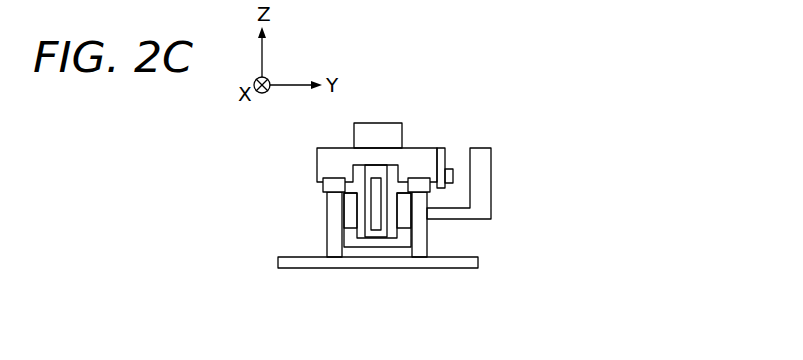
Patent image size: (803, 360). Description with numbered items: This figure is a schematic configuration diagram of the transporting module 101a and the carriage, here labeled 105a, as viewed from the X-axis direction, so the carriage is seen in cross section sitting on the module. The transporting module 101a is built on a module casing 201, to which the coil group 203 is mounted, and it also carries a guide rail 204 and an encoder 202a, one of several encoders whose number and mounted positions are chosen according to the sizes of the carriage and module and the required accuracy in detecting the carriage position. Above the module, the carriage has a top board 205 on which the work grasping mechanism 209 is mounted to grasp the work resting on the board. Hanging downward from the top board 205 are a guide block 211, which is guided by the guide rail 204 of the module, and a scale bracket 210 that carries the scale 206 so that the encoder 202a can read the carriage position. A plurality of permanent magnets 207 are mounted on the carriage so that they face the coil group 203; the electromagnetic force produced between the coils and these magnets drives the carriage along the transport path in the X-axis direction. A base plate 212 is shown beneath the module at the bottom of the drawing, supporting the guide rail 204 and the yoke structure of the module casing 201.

The transporting module 101a is at (413, 292).
The objective lens actuator unit 105a is at (396, 107).
The module casing 201 is at (423, 247).
The encoder 202a is at (485, 200).
The coil group 203 is at (403, 229).
The guide rail 204 is at (331, 189).
The top board 205 is at (322, 157).
The scale 206 is at (453, 178).
The permanent magnets 207 is at (374, 208).
The work grasping mechanism 209 is at (358, 137).
The scale bracket 210 is at (444, 155).
The guide block 211 is at (423, 172).
The base plate 212 is at (478, 263).